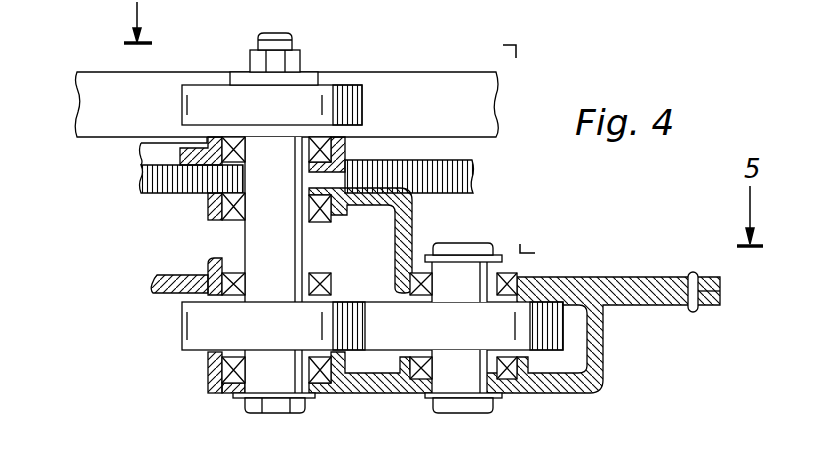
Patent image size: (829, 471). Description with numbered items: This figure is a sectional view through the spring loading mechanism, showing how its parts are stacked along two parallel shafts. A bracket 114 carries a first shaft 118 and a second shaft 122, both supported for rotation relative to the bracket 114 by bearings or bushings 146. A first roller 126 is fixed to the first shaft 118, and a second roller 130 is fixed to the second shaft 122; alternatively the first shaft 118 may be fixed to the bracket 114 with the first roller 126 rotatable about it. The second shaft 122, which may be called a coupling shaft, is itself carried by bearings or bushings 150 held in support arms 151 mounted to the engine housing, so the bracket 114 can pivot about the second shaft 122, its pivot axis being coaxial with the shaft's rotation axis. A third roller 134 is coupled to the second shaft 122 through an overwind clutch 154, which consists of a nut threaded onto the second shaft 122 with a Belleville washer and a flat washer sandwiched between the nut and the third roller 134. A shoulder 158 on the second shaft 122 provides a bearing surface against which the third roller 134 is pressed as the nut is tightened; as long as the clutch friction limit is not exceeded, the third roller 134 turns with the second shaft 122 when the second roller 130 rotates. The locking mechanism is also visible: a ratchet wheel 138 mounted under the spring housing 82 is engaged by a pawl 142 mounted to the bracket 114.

The spring housing 82 is at (470, 70).
The bracket 114 is at (598, 336).
The first shaft 118 is at (474, 266).
The second shaft 122 is at (256, 229).
The first roller 126 is at (555, 350).
The second roller 130 is at (182, 320).
The third roller 134 is at (182, 100).
The ratchet wheel 138 is at (447, 173).
The pawl 142 is at (352, 184).
The bearings or bushings 146 is at (326, 214).
The bearings or bushings 150 is at (320, 152).
The support arms 151 is at (141, 148).
The overwind clutch 154 is at (322, 38).
The shoulder 158 is at (241, 135).